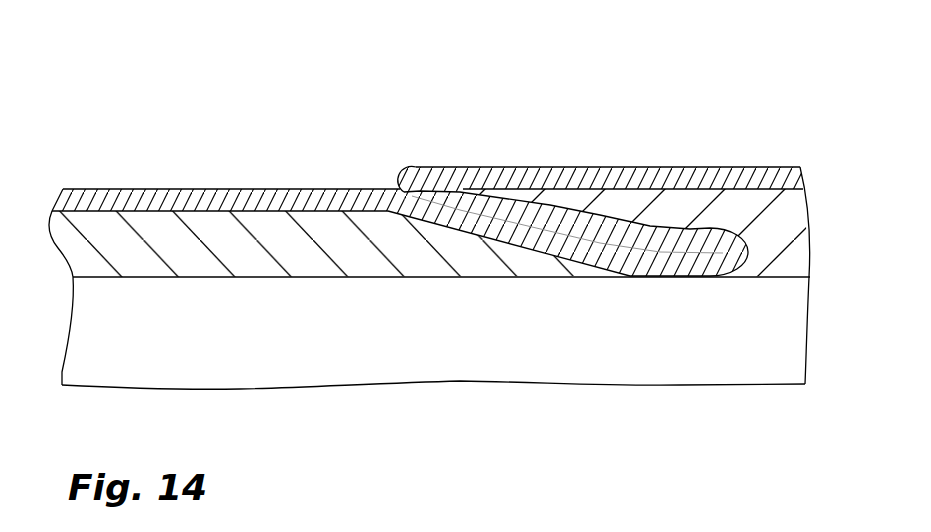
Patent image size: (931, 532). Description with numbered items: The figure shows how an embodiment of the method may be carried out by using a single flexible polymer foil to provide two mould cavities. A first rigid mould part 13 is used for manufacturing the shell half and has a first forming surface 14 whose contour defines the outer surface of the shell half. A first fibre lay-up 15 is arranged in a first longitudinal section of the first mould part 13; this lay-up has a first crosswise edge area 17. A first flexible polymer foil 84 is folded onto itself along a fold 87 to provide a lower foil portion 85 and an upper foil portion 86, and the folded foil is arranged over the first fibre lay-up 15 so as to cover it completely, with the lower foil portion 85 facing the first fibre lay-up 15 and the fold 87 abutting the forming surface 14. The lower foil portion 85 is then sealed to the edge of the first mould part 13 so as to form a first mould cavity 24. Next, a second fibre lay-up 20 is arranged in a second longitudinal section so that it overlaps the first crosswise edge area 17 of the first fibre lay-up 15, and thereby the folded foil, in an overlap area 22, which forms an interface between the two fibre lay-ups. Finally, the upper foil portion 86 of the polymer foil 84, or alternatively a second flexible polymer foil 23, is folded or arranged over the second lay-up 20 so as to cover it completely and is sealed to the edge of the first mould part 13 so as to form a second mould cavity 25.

The first rigid mould part 13 is at (733, 359).
The first forming surface 14 is at (202, 275).
The first fibre lay-up 15 is at (98, 235).
The first crosswise edge area 17 is at (568, 151).
The second fibre lay-up 20 is at (610, 168).
The overlap area 22 is at (448, 190).
The second flexible polymer foil 23 is at (621, 166).
The first mould cavity 24 is at (340, 248).
The second mould cavity 25 is at (667, 205).
The first flexible polymer foil 84 is at (243, 188).
The lower foil portion 85 is at (541, 230).
The upper foil portion 86 is at (560, 222).
The fold 87 is at (780, 192).